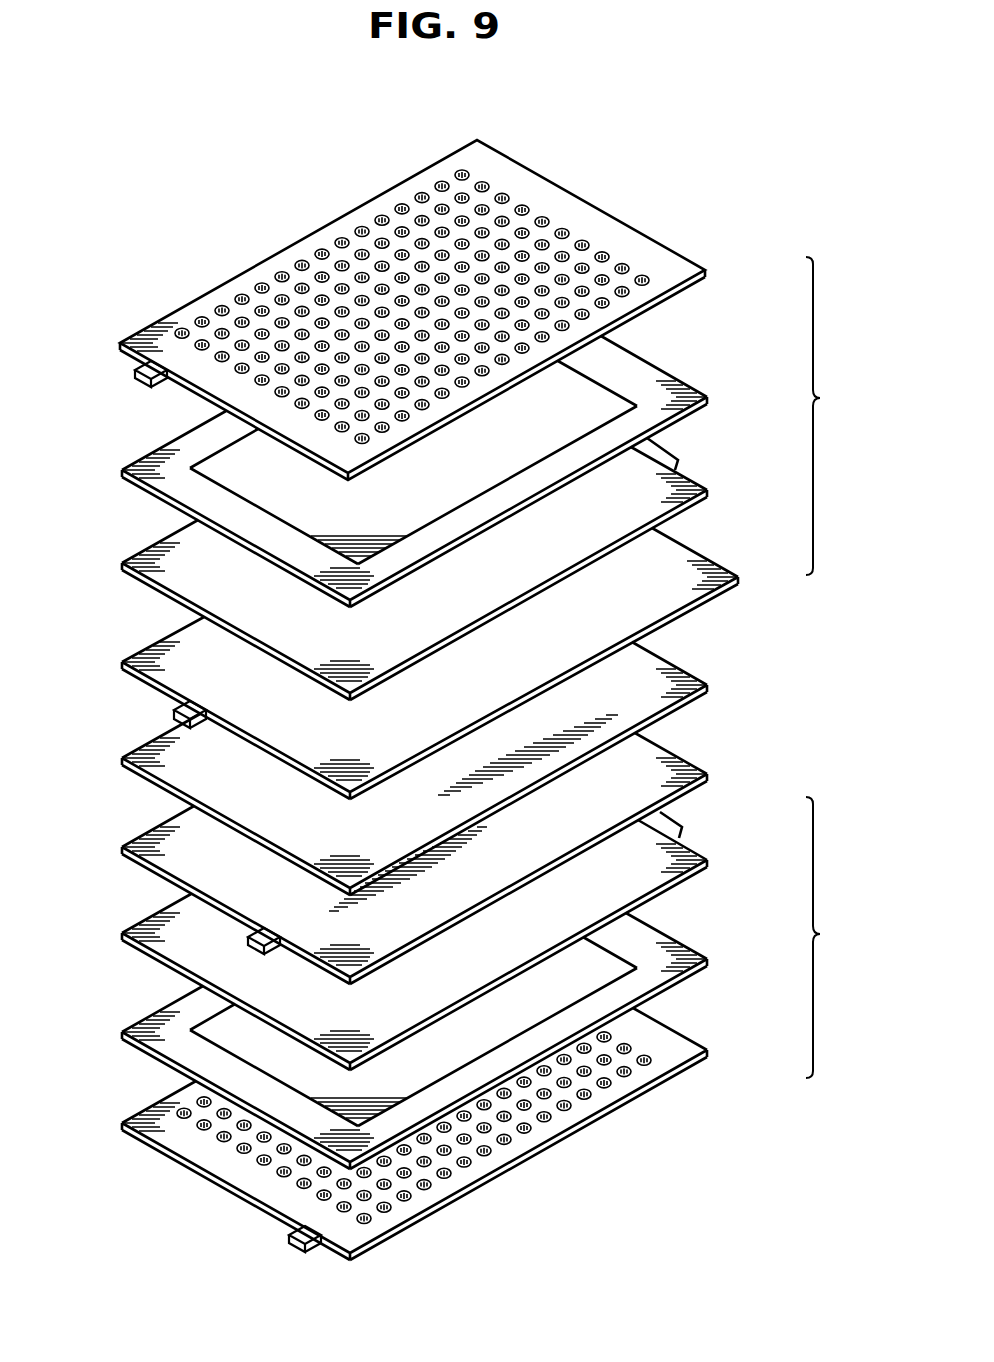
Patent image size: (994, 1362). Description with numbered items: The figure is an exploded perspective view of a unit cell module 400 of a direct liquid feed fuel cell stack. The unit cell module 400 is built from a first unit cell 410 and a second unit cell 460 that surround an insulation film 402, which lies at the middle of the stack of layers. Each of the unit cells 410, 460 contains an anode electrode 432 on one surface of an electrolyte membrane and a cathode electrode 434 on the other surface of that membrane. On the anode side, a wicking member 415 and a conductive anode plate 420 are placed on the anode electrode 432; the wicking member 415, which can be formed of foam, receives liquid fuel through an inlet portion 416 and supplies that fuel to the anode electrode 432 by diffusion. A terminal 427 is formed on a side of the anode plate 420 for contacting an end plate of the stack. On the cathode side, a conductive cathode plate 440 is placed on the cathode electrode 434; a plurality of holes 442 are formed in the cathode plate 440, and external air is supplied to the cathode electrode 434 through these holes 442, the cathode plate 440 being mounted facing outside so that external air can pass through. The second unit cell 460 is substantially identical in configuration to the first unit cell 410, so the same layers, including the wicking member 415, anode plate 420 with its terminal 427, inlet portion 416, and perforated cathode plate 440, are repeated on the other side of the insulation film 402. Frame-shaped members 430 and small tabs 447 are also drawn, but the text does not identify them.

The unit cell module 400 is at (647, 183).
The insulation film 402 is at (690, 670).
The first unit cell 410 is at (836, 416).
The wicking member 415 is at (635, 492).
The inlet portion 416 is at (672, 443).
The anode plate 420 is at (688, 549).
The terminal 427 is at (176, 716).
The frame plate 430 is at (696, 376).
The anode electrode 432 is at (482, 1043).
The cathode electrode 434 is at (542, 422).
The cathode plate 440 is at (704, 271).
The holes 442 is at (345, 240).
The alignment tab of cover plate 447 is at (144, 364).
The second unit cell 460 is at (834, 937).